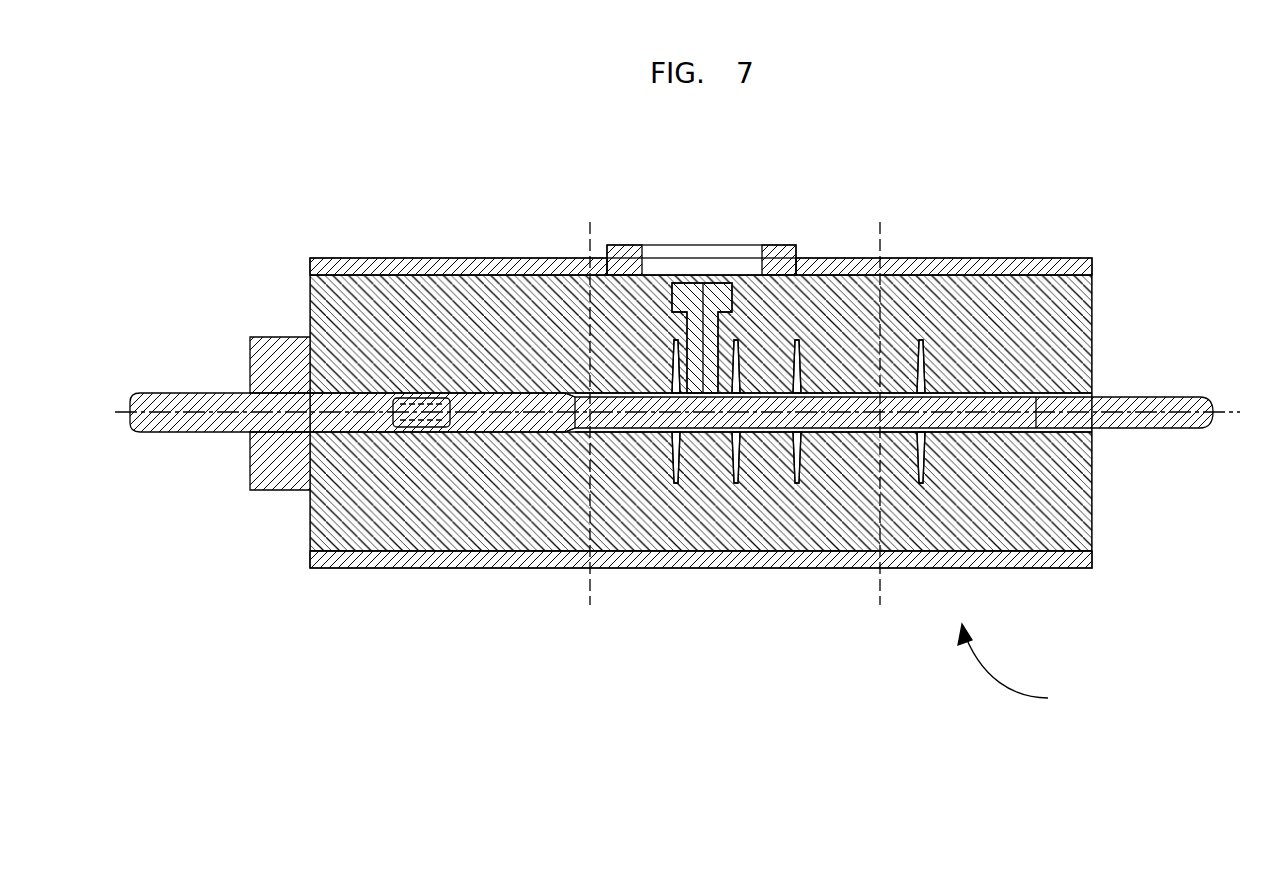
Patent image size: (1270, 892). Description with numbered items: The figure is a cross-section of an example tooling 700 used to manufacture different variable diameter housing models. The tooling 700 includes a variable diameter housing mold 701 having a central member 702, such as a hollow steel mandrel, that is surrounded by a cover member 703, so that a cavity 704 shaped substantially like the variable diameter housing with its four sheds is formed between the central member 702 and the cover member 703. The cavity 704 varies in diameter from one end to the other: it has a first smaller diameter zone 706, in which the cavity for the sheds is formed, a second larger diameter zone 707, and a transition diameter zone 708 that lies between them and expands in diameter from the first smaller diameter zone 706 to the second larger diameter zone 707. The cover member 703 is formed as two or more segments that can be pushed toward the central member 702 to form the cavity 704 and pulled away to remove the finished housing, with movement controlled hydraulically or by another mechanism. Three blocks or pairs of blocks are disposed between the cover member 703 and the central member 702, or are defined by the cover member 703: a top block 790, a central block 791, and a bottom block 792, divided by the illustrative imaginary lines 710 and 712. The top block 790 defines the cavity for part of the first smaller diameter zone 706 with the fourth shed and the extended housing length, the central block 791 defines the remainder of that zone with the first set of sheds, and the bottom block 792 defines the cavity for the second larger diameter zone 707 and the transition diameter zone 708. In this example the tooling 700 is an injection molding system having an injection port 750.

The tooling 700 is at (677, 568).
The variable diameter housing mold 701 is at (1023, 661).
The central member 702 is at (1160, 422).
The cover member 703 is at (1078, 298).
The cavity 704 is at (352, 532).
The first smaller diameter zone 706 is at (818, 431).
The second larger diameter zone 707 is at (467, 436).
The transition diameter zone 708 is at (558, 436).
The illustrative line 710 is at (590, 228).
The illustrative line 712 is at (882, 228).
The injection port 750 is at (690, 268).
The top block 790 is at (1025, 290).
The central block 791 is at (855, 295).
The bottom block 792 is at (398, 258).